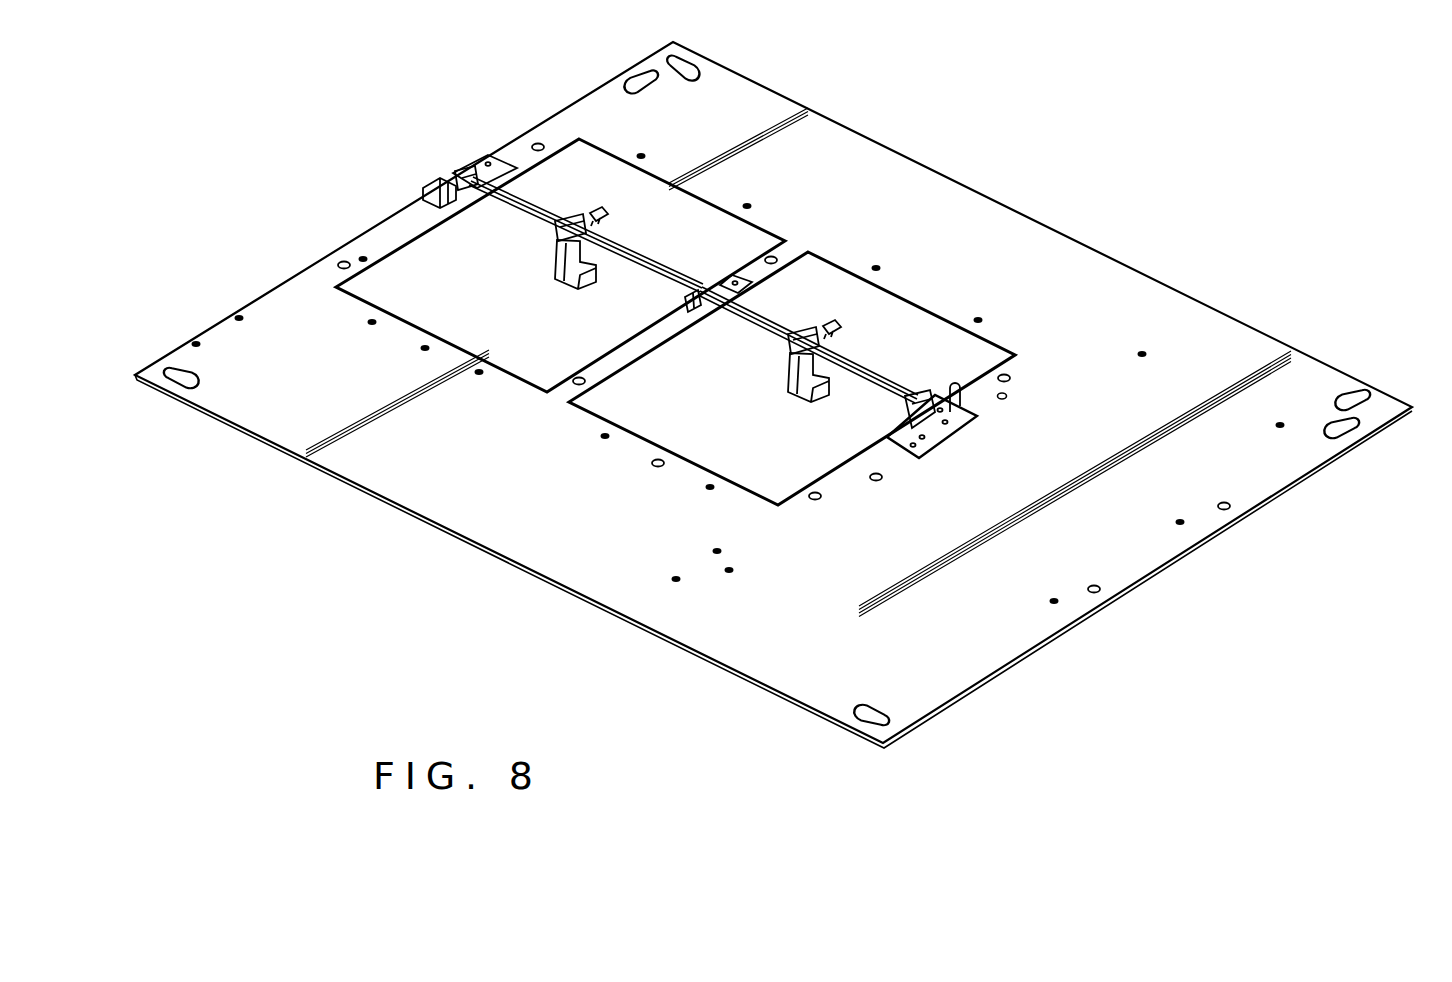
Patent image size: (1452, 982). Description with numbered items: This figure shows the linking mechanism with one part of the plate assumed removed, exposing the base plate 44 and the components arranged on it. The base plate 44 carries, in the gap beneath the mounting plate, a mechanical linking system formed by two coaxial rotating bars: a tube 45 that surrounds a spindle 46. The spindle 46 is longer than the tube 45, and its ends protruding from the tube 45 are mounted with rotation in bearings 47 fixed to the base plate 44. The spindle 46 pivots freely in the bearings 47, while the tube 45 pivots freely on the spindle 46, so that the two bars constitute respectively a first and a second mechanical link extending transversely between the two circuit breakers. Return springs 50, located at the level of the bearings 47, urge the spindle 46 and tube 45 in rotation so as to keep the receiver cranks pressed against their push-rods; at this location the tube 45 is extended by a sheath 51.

The base plate 44 is at (531, 502).
The tube 45 is at (672, 267).
The spindle 46 is at (873, 365).
The bearings 47 is at (1003, 397).
The return springs 50 is at (451, 175).
The sheath 51 is at (520, 192).